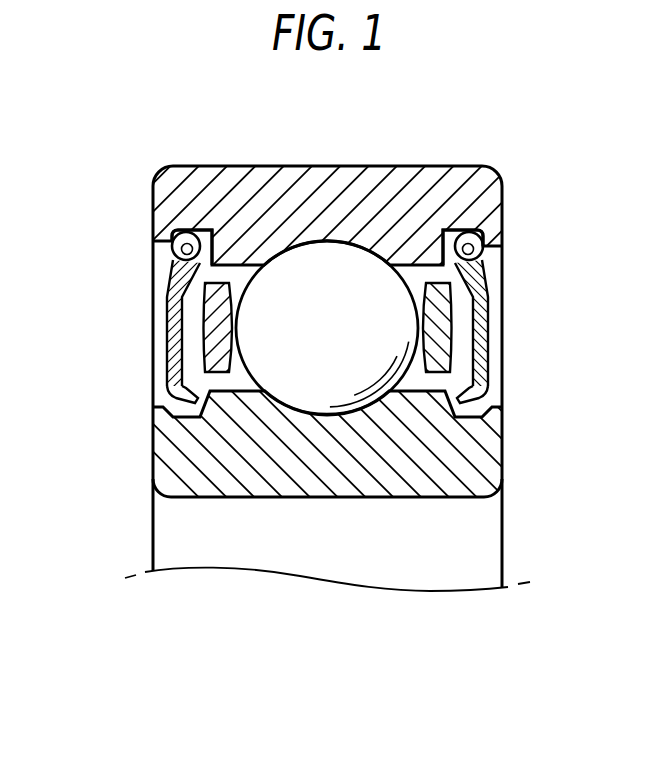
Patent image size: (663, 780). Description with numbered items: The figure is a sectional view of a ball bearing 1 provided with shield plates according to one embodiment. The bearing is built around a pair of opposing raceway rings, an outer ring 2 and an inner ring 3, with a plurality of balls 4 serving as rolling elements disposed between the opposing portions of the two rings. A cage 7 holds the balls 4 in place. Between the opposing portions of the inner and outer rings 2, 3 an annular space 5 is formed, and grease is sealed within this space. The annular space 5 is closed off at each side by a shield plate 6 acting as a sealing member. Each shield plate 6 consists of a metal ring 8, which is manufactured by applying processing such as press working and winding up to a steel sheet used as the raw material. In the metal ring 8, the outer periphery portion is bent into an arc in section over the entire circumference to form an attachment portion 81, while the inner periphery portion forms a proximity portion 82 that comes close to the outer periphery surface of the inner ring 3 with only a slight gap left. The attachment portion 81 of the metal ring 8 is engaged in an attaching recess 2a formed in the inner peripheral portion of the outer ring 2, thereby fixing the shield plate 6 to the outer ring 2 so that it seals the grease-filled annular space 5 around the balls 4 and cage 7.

The ball bearing 1 is at (128, 205).
The outer ring 2 is at (258, 167).
The attaching recess 2a is at (194, 229).
The inner ring 3 is at (160, 466).
The balls 4 is at (337, 258).
The annular space 5 is at (331, 390).
The cage 7 is at (442, 334).
The shield plate 6 is at (331, 390).
The metal ring 8 is at (176, 352).
The attachment portion 81 is at (180, 250).
The proximity portion 82 is at (190, 397).